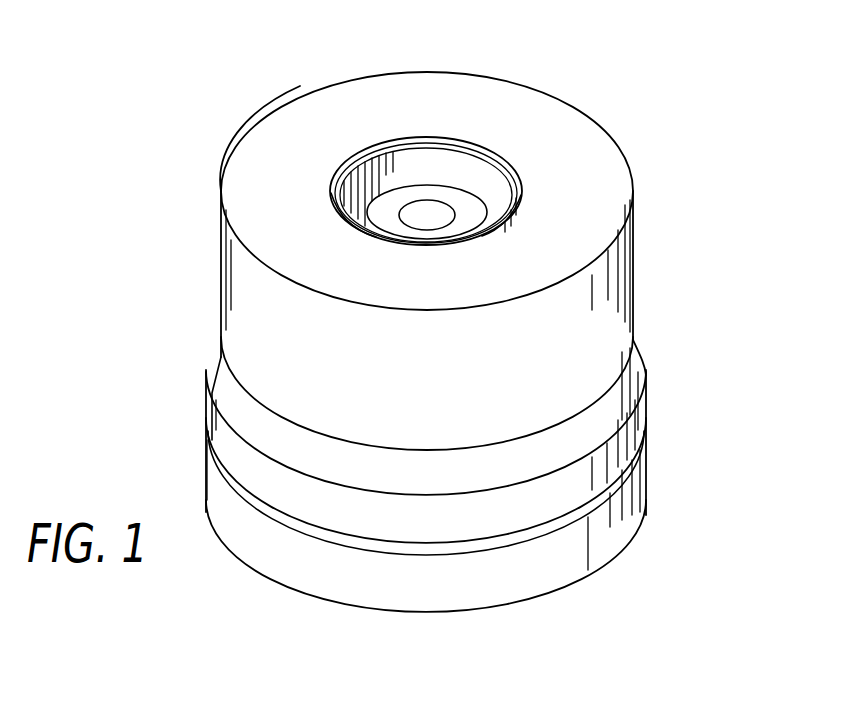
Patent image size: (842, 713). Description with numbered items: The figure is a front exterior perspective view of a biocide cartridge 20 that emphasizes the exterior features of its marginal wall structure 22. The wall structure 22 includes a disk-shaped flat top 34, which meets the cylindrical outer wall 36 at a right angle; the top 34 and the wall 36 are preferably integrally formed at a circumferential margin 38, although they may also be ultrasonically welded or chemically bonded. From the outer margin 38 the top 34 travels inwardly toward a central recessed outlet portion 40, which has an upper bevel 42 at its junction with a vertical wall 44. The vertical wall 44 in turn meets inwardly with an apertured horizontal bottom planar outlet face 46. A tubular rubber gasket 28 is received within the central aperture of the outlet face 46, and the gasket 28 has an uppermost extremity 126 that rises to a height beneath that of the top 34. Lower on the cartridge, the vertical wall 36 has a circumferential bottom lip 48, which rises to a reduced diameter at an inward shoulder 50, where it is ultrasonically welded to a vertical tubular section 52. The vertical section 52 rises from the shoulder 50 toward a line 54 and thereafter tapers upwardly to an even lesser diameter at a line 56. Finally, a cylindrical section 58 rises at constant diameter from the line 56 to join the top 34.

The biocide cartridge 20 is at (626, 150).
The marginal wall structure 22 is at (600, 295).
The tubular rubber gasket 28 is at (427, 190).
The top 34 is at (464, 89).
The cylindrical outer wall 36 is at (467, 393).
The circumferential margin 38 is at (247, 128).
The central recessed outlet portion 40 is at (494, 199).
The upper bevel 42 is at (511, 178).
The vertical wall 44 is at (470, 173).
The bottom planar outlet face 46 is at (353, 205).
The circumferential bottom lip 48 is at (610, 528).
The inward shoulder 50 is at (633, 455).
The vertical tubular section 52 is at (625, 432).
The line 54 is at (250, 437).
The line 56 is at (223, 357).
The cylindrical section 58 is at (240, 291).
The uppermost extremity 126 is at (393, 197).